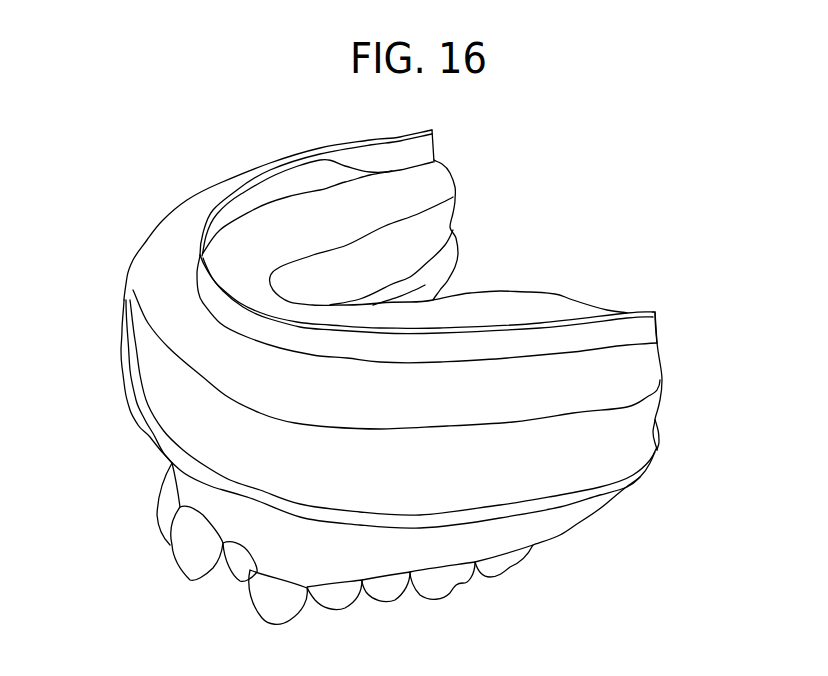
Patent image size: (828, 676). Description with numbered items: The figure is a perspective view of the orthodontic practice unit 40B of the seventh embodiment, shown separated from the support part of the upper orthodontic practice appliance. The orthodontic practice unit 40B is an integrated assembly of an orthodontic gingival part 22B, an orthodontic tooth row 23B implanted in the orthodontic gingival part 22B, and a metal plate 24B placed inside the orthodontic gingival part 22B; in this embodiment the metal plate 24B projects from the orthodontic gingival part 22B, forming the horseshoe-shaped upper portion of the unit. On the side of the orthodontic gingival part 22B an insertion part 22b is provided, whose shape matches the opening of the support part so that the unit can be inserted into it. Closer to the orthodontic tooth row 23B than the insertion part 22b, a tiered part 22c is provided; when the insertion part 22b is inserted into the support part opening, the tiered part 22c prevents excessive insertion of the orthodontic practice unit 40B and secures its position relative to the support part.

The metal plate 24B is at (573, 337).
The orthodontic practice unit 40B is at (645, 369).
The orthodontic gingival part 22B is at (593, 467).
The insertion part 22b is at (627, 436).
The tiered part 22c is at (143, 405).
The orthodontic tooth row 23B is at (457, 577).